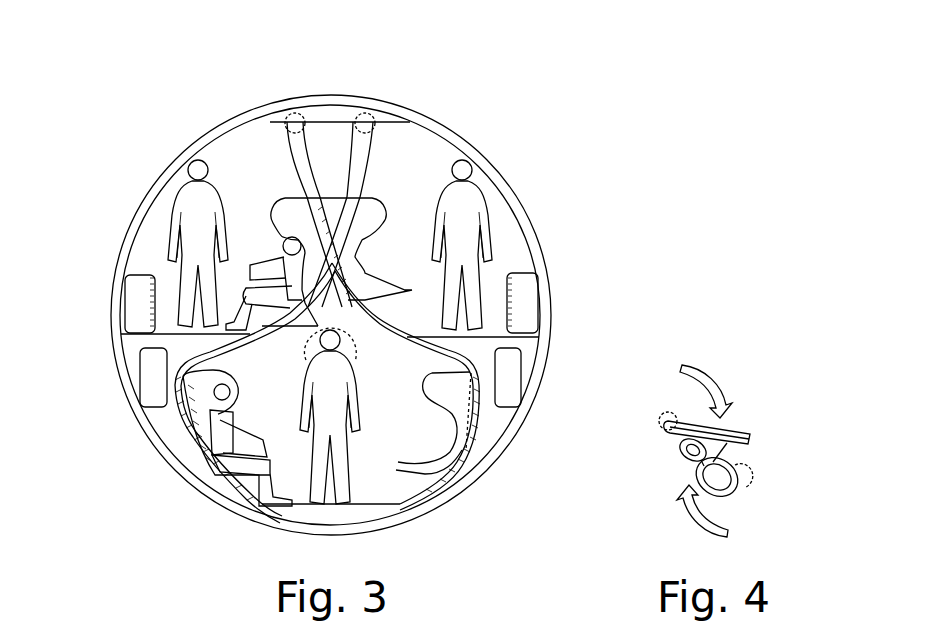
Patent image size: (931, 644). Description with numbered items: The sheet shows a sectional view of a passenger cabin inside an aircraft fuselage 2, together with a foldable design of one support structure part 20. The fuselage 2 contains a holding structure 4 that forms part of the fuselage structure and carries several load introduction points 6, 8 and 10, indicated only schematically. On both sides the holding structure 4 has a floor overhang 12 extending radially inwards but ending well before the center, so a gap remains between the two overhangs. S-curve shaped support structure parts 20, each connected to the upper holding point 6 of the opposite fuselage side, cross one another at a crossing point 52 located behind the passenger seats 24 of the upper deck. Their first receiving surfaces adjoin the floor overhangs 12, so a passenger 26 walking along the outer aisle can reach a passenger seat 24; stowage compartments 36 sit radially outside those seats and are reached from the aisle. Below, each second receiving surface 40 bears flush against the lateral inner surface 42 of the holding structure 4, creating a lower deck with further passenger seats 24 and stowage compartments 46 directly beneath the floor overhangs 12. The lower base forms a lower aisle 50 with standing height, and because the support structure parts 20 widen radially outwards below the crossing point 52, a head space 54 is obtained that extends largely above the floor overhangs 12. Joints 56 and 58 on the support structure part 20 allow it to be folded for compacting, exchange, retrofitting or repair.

In FIG. 3, the aircraft fuselage 2 is at (475, 110).
In FIG. 3, the holding structure 4 is at (508, 168).
In FIG. 3, the upper holding point 6 is at (296, 115).
In FIG. 3, the load introduction point 8 is at (158, 411).
In FIG. 3, the load introduction point 10 is at (252, 528).
In FIG. 3, the floor overhang 12 is at (143, 257).
In FIG. 4, the support structure part 20 is at (735, 494).
In FIG. 3, the passenger seat 24 is at (290, 205).
In FIG. 3, the passenger 26 is at (176, 189).
In FIG. 3, the stowage compartment 36 is at (525, 299).
In FIG. 3, the second receiving surface 40 is at (187, 461).
In FIG. 3, the lateral inner surface 42 is at (178, 441).
In FIG. 3, the stowage compartment 46 is at (507, 369).
In FIG. 3, the lower aisle 50 is at (362, 500).
In FIG. 3, the crossing point 52 is at (363, 206).
In FIG. 3, the head space 54 is at (348, 341).
In FIG. 4, the joint 56 is at (670, 414).
In FIG. 4, the joint 58 is at (741, 457).